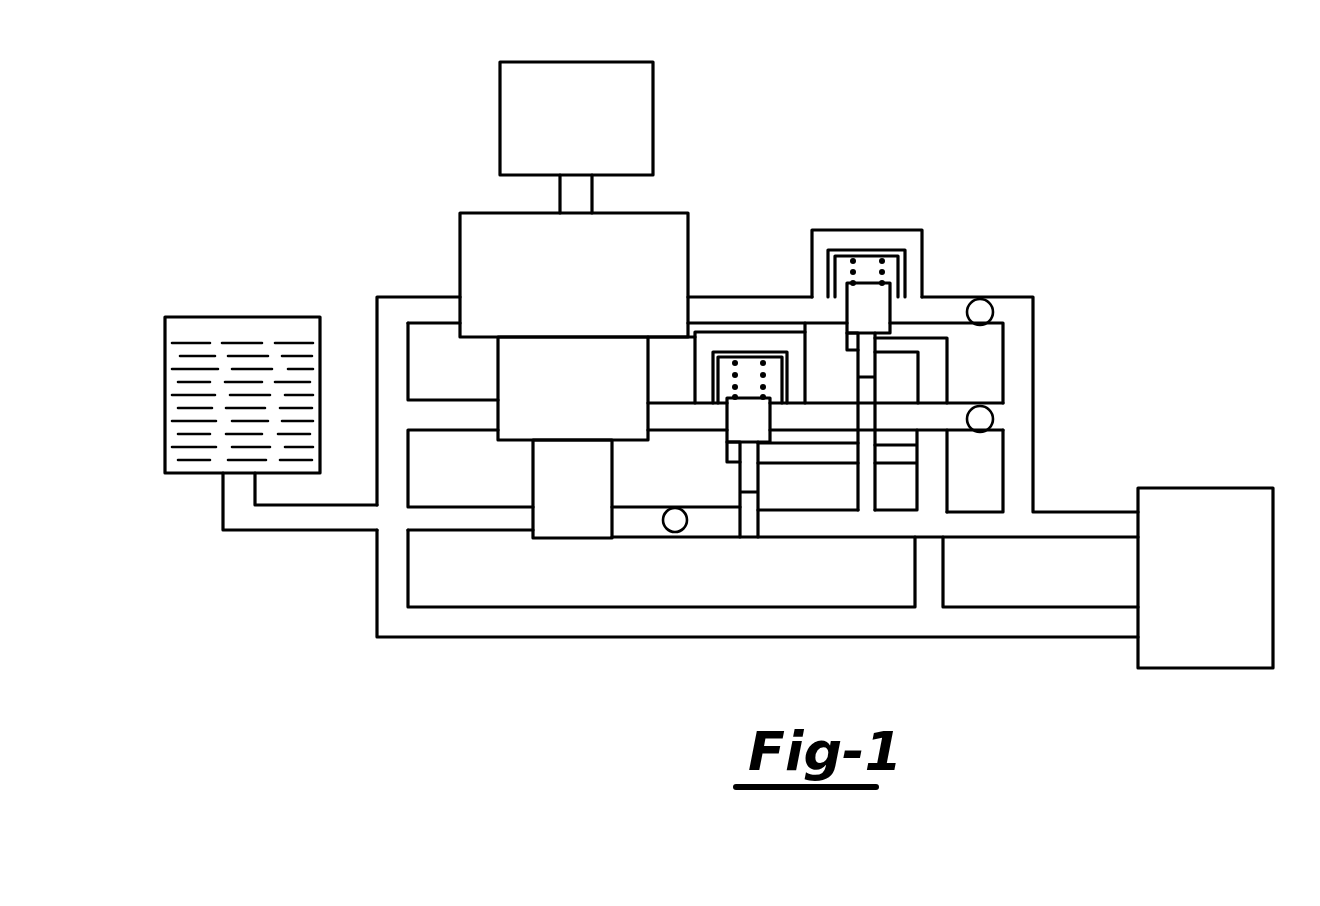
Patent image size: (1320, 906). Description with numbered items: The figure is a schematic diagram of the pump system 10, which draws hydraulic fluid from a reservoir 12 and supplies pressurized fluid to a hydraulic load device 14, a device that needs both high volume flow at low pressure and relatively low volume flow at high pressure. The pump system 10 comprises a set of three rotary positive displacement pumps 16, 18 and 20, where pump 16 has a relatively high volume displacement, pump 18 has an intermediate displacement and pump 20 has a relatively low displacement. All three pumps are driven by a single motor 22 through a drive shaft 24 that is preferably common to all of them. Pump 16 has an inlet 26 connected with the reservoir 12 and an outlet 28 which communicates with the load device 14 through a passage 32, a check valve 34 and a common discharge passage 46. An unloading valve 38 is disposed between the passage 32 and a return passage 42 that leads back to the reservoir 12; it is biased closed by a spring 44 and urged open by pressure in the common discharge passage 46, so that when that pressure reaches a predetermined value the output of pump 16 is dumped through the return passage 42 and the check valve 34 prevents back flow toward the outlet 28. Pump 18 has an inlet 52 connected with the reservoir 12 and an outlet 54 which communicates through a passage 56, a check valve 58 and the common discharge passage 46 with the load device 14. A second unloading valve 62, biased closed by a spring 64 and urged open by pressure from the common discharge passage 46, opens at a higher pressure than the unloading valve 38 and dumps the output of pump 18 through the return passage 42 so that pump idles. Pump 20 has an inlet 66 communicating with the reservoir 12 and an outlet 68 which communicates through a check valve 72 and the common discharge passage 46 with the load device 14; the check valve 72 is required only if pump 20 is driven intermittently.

The pump system 10 is at (432, 182).
The reservoir 12 is at (207, 317).
The hydraulic load device 14 is at (1232, 486).
The pump 16 is at (688, 233).
The pump 18 is at (496, 357).
The pump 20 is at (620, 482).
The motor 22 is at (653, 97).
The drive shaft 24 is at (592, 197).
The inlet 26 is at (433, 294).
The outlet 28 is at (760, 296).
The passage 32 is at (876, 226).
The check valve 34 is at (993, 300).
The unloading valve 38 is at (884, 315).
The return passage 42 is at (930, 373).
The spring 44 is at (884, 268).
The common discharge passage 46 is at (973, 508).
The inlet 52 is at (438, 435).
The outlet 54 is at (693, 436).
The passage 56 is at (838, 350).
The check valve 58 is at (995, 420).
The unloading valve 62 is at (775, 448).
The spring 64 is at (725, 370).
The inlet 66 is at (508, 478).
The outlet 68 is at (645, 540).
The check valve 72 is at (680, 535).